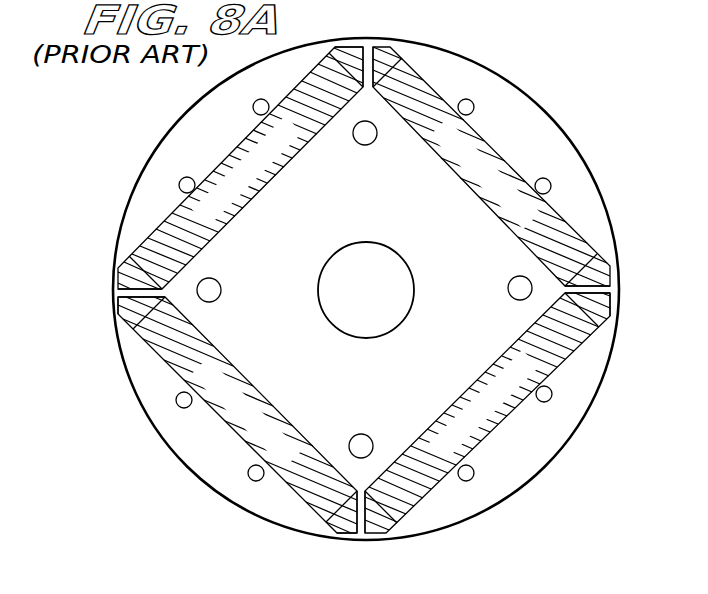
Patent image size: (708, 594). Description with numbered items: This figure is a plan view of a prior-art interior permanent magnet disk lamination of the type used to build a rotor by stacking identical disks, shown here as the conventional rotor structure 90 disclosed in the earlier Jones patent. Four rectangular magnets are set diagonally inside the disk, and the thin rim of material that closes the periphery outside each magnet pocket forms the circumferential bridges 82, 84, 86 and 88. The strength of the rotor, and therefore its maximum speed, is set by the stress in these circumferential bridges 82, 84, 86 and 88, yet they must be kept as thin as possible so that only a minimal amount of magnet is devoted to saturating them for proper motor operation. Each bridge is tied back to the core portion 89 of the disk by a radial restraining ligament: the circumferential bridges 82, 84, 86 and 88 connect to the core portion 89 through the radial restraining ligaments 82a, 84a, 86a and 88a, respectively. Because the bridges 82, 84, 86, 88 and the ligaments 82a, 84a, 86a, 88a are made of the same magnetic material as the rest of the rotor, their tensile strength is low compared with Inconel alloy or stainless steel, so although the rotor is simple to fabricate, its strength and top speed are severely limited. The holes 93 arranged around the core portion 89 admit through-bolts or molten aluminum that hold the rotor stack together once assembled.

The circumferential bridge 82 is at (370, 45).
The radial restraining ligament 82a is at (343, 50).
The circumferential bridge 84 is at (119, 292).
The radial restraining ligament 84a is at (126, 300).
The circumferential bridge 86 is at (362, 534).
The radial restraining ligament 86a is at (353, 520).
The circumferential bridge 88 is at (608, 289).
The radial restraining ligament 88a is at (600, 297).
The core portion 89 is at (497, 260).
The rotor assembly 90 is at (126, 140).
The holes 93 is at (366, 145).